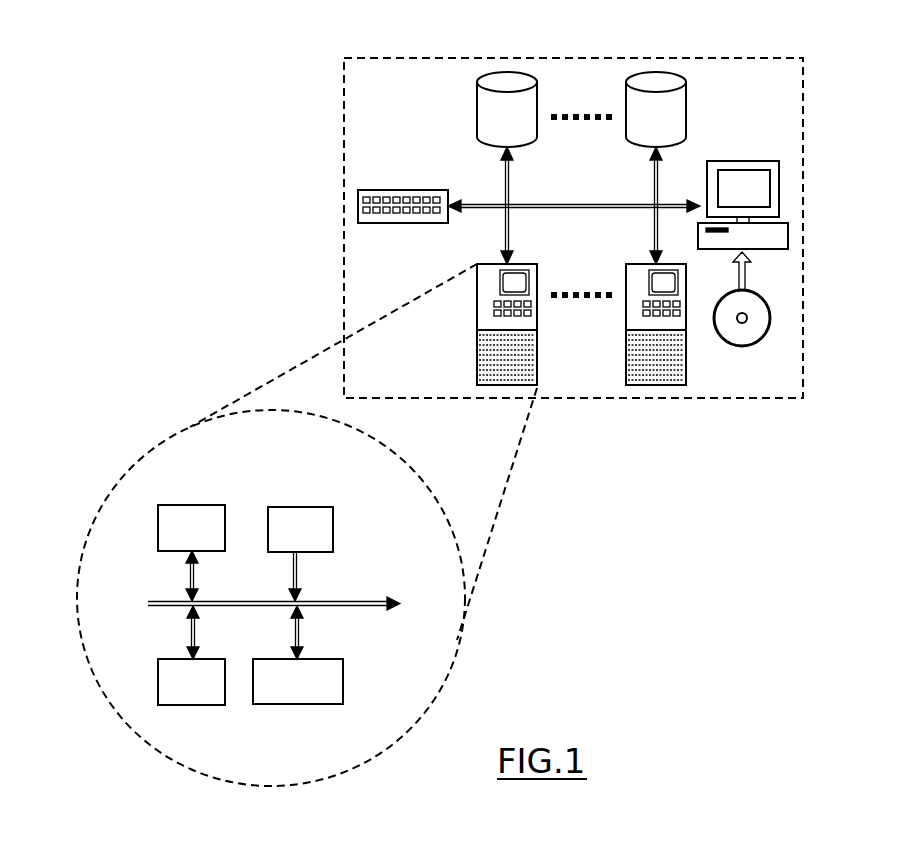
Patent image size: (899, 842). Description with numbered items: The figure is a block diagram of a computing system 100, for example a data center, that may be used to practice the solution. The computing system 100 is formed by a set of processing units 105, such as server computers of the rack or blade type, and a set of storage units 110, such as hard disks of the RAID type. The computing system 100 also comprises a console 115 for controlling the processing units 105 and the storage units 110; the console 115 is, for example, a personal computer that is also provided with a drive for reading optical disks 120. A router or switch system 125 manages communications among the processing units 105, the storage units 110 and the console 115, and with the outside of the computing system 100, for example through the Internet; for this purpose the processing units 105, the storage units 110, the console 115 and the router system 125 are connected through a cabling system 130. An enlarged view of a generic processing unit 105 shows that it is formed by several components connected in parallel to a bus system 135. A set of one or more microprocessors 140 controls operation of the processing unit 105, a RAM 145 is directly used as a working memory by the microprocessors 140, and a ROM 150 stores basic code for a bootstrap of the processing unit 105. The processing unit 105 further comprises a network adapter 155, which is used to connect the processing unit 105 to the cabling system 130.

The computing system 100 is at (488, 228).
The processing units 105 is at (381, 525).
The storage units 110 is at (545, 109).
The console 115 is at (745, 186).
The optical disks 120 is at (756, 319).
The router system 125 is at (403, 187).
The cabling system 130 is at (574, 205).
The bus system 135 is at (296, 618).
The microprocessors 140 is at (212, 540).
The RAM 145 is at (201, 677).
The ROM 150 is at (322, 540).
The network adapter 155 is at (308, 678).